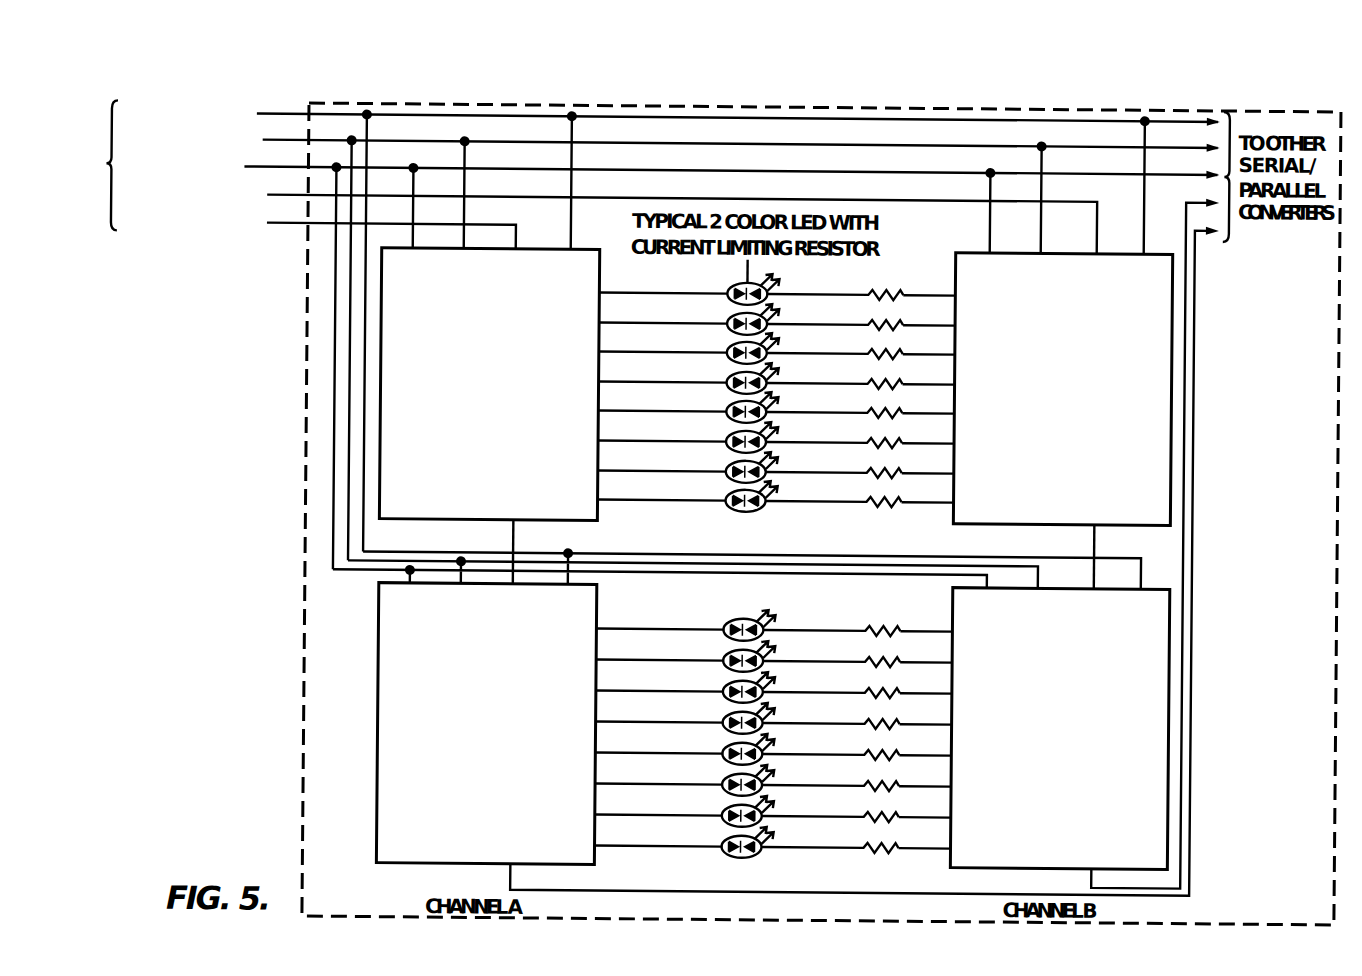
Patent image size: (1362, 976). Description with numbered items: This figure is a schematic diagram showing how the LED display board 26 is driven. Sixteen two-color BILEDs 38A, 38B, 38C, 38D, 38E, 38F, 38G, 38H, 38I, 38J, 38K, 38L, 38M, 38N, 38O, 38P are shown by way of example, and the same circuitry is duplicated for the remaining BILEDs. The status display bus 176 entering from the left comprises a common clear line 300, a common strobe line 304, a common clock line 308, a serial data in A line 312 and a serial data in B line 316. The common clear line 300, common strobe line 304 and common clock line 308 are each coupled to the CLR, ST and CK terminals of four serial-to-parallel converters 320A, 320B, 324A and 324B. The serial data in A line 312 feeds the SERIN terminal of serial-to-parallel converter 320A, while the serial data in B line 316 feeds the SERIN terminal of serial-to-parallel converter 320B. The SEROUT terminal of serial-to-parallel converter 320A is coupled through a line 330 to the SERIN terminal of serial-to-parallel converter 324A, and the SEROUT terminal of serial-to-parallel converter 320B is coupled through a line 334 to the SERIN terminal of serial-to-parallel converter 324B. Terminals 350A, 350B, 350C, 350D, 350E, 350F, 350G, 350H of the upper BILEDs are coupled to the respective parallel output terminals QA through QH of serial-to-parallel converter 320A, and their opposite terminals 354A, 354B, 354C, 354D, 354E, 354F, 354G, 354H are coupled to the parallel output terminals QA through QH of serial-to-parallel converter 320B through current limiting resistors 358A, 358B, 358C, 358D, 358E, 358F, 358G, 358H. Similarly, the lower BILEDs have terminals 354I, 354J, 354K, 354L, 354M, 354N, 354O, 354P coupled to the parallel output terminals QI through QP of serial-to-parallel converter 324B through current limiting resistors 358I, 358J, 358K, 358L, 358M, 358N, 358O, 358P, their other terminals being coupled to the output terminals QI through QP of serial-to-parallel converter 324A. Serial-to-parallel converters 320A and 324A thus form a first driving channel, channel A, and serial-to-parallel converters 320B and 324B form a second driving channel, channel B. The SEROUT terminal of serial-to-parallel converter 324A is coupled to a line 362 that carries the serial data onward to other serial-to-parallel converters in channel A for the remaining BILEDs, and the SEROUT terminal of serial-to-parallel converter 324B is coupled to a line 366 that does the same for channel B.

The LED display board 26 is at (308, 340).
The status display bus 176 is at (175, 167).
The common clear line 300 is at (667, 115).
The common strobe line 304 is at (667, 141).
The common clock line 308 is at (667, 168).
The serial data in A line 312 is at (290, 224).
The serial data in B line 316 is at (750, 195).
The serial-to-parallel converter 320A is at (495, 474).
The serial-to-parallel converter 320B is at (1070, 474).
The serial-to-parallel converter 324A is at (488, 827).
The serial-to-parallel converter 324B is at (1073, 827).
The line 330 is at (519, 536).
The line 334 is at (1100, 536).
The line 362 is at (514, 883).
The line 366 is at (1095, 880).
The terminal 350A is at (613, 277).
The terminal 350B is at (613, 307).
The terminal 350C is at (613, 336).
The terminal 350D is at (613, 366).
The terminal 350E is at (613, 395).
The terminal 350F is at (613, 425).
The terminal 350G is at (613, 455).
The terminal 350H is at (613, 484).
The BILED 38A is at (736, 284).
The BILED 38B is at (736, 314).
The BILED 38C is at (736, 343).
The BILED 38D is at (736, 373).
The BILED 38E is at (736, 402).
The BILED 38F is at (736, 432).
The BILED 38G is at (736, 462).
The BILED 38H is at (736, 491).
The BILED 38I is at (735, 620).
The BILED 38J is at (735, 651).
The BILED 38K is at (735, 682).
The BILED 38L is at (735, 713).
The BILED 38M is at (735, 744).
The BILED 38N is at (735, 775).
The BILED 38O is at (735, 806).
The BILED 38P is at (735, 837).
The terminal 354A is at (822, 277).
The terminal 354B is at (822, 307).
The terminal 354C is at (822, 336).
The terminal 354D is at (822, 366).
The terminal 354E is at (822, 395).
The terminal 354F is at (822, 425).
The terminal 354G is at (822, 455).
The terminal 354H is at (822, 484).
The terminal 354I is at (820, 613).
The terminal 354J is at (820, 644).
The terminal 354K is at (820, 675).
The terminal 354L is at (820, 706).
The terminal 354M is at (820, 737).
The terminal 354N is at (820, 768).
The terminal 354O is at (820, 799).
The terminal 354P is at (820, 830).
The current limiting resistor 358A is at (912, 277).
The current limiting resistor 358B is at (912, 307).
The current limiting resistor 358C is at (912, 336).
The current limiting resistor 358D is at (912, 366).
The current limiting resistor 358E is at (912, 395).
The current limiting resistor 358F is at (912, 425).
The current limiting resistor 358G is at (912, 455).
The current limiting resistor 358H is at (912, 484).
The current limiting resistor 358I is at (908, 613).
The current limiting resistor 358J is at (908, 644).
The current limiting resistor 358K is at (908, 675).
The current limiting resistor 358L is at (908, 706).
The current limiting resistor 358M is at (908, 737).
The current limiting resistor 358N is at (908, 768).
The current limiting resistor 358O is at (908, 799).
The current limiting resistor 358P is at (908, 830).